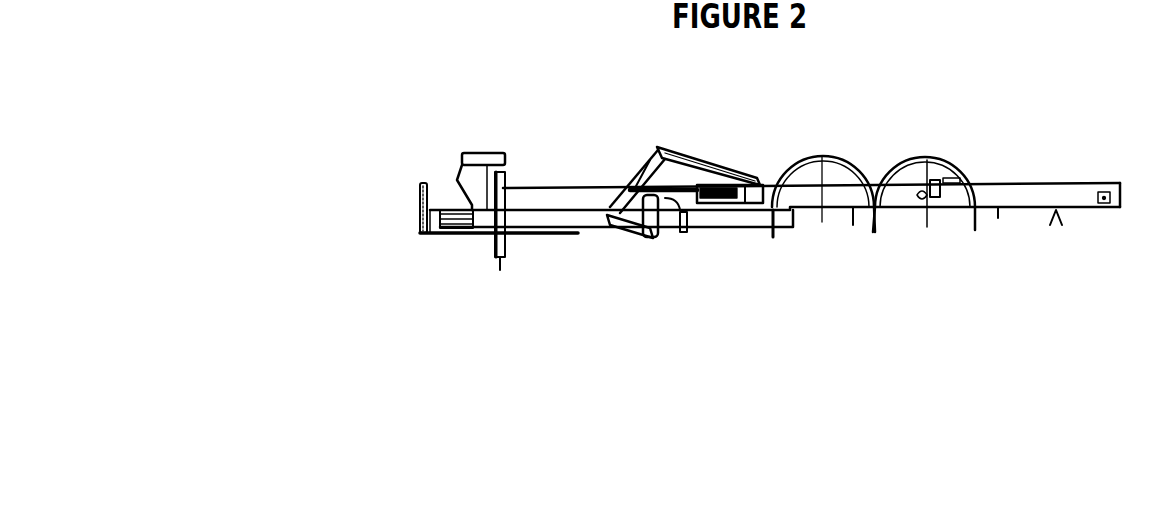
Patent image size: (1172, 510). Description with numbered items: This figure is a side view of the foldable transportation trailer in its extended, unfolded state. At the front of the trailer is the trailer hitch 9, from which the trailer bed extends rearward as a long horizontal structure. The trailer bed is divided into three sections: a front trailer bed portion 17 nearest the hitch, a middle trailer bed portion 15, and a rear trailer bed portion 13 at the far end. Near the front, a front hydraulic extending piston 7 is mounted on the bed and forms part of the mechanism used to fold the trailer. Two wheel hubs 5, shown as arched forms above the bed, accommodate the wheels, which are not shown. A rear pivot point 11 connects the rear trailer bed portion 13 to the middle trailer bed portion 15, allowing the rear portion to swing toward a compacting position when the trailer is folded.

The wheel hubs 5 is at (830, 153).
The front hydraulic extending piston 7 is at (728, 203).
The trailer hitch 9 is at (423, 243).
The rear pivot point 11 is at (937, 182).
The rear trailer bed portion 13 is at (1078, 200).
The middle trailer bed portion 15 is at (835, 197).
The front trailer bed portion 17 is at (553, 195).